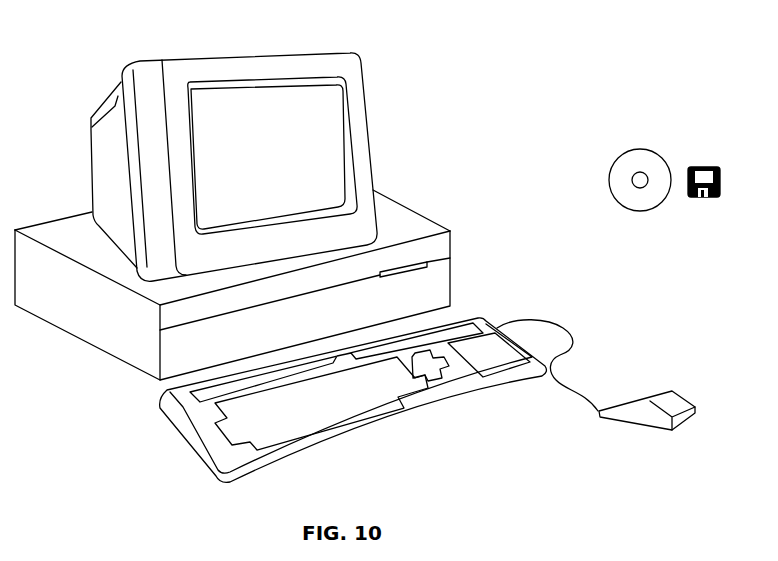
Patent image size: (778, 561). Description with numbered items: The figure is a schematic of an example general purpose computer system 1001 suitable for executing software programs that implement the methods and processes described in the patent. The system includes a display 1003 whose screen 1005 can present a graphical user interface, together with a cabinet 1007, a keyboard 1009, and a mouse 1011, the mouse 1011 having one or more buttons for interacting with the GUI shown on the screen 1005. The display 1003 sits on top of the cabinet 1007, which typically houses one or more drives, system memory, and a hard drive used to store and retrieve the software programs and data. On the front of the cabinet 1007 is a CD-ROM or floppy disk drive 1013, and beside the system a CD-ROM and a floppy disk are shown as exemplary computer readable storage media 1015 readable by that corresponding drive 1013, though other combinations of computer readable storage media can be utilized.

The computer system 1001 is at (585, 74).
The display 1003 is at (372, 168).
The screen 1005 is at (343, 98).
The cabinet 1007 is at (108, 363).
The keyboard 1009 is at (360, 436).
The mouse 1011 is at (683, 398).
The CD-ROM or floppy disk drive 1013 is at (430, 261).
The computer readable storage medium 1015 is at (695, 127).